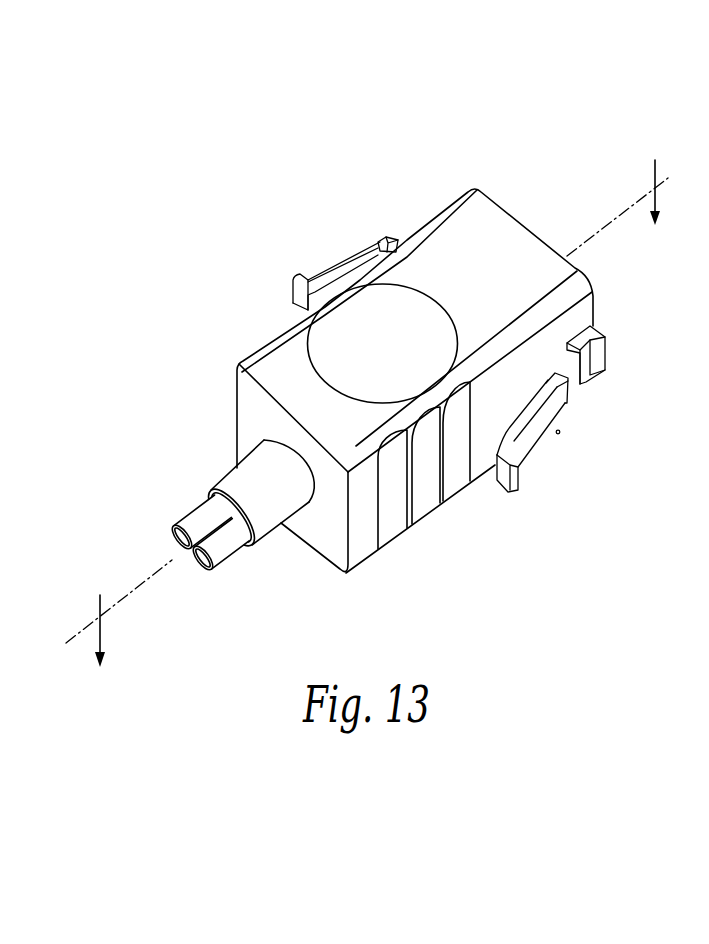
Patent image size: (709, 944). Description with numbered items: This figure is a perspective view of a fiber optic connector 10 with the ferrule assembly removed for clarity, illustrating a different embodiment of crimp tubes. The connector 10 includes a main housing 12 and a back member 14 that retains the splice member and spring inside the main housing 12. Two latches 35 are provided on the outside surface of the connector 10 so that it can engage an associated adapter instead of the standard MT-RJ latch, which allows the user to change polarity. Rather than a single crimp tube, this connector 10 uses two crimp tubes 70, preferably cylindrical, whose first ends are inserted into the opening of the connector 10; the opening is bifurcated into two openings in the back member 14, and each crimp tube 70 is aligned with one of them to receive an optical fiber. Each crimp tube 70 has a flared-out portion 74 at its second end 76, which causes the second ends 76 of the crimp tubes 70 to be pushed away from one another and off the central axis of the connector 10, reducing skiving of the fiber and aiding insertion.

The fiber optic connector 10 is at (569, 192).
The main housing 12 is at (577, 268).
The back member 14 is at (342, 600).
The latches 35 is at (540, 440).
The crimp tubes 70 is at (244, 547).
The flared-out portion 74 is at (214, 563).
The second end 76 is at (175, 520).